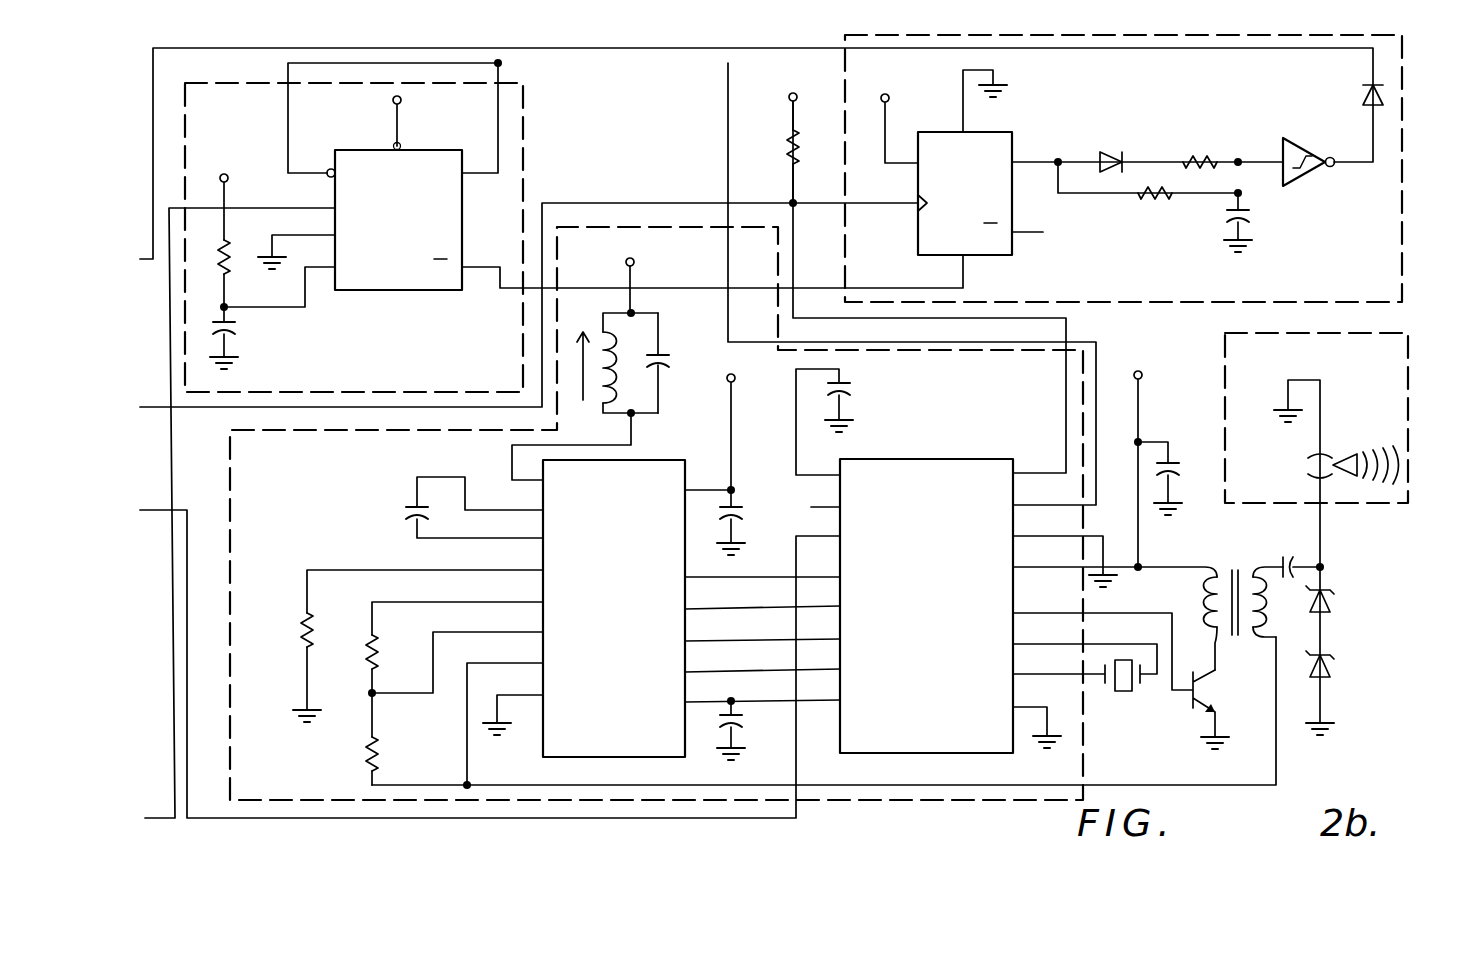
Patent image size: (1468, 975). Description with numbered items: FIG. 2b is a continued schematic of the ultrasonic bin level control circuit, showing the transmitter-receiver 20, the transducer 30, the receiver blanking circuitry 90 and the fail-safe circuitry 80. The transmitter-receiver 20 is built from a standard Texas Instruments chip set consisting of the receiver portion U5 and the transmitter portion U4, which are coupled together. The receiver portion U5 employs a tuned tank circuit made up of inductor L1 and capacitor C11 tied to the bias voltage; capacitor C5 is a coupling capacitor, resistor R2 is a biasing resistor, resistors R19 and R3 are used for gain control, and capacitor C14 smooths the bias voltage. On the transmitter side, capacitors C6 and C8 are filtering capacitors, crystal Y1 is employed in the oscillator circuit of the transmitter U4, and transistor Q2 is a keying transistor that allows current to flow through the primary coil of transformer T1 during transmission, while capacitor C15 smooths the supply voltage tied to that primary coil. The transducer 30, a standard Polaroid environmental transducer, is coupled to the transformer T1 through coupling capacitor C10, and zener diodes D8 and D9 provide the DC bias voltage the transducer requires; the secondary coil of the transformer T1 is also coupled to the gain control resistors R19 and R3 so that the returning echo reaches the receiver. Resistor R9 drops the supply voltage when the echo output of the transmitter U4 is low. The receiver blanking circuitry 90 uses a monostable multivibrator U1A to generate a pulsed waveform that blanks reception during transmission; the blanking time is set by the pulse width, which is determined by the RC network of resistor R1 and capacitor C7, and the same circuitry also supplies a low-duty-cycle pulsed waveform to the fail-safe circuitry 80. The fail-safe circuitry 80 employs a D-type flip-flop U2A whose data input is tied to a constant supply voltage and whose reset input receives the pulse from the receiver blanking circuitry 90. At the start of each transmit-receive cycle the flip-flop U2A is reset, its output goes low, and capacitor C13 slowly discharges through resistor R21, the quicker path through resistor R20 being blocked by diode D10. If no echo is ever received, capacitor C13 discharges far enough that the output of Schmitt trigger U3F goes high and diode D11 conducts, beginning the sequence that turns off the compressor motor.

The transmitter-receiver 20 is at (656, 513).
The transducer 30 is at (1316, 450).
The fail-safe circuitry 80 is at (1123, 168).
The receiver blanking circuitry 90 is at (354, 237).
The monostable multivibrator U1A is at (351, 193).
The resistor R1 is at (211, 235).
The capacitor C7 is at (238, 340).
The D-type flip-flop U2A is at (952, 171).
The resistor R9 is at (772, 133).
The diode D10 is at (1110, 147).
The resistor R20 is at (1196, 144).
The resistor R21 is at (1154, 207).
The capacitor C13 is at (1259, 229).
The Schmitt Trigger U3F is at (1306, 169).
The diode D11 is at (1362, 95).
The inductor L1 is at (617, 338).
The capacitor C11 is at (677, 363).
The receiver portion U5 is at (596, 608).
The coupling capacitor C5 is at (454, 507).
The biasing resistor R2 is at (399, 646).
The gain control resistor R19 is at (454, 647).
The gain control resistor R3 is at (388, 739).
The smoothing capacitor C14 is at (734, 460).
The filtering capacitor C6 is at (744, 730).
The transmitter portion U4 is at (964, 602).
The filtering capacitor C8 is at (837, 418).
The smoothing capacitor C15 is at (1176, 466).
The transformer T1 is at (1148, 618).
The keying transistor Q2 is at (1132, 681).
The crystal Y1 is at (1123, 692).
The coupling capacitor C10 is at (1290, 553).
The zener diode D8 is at (1333, 608).
The zener diode D9 is at (1333, 672).